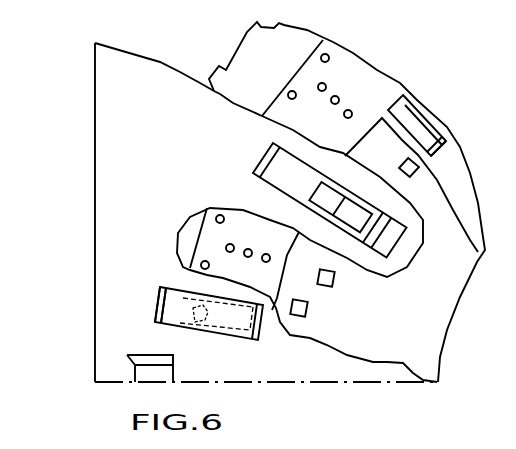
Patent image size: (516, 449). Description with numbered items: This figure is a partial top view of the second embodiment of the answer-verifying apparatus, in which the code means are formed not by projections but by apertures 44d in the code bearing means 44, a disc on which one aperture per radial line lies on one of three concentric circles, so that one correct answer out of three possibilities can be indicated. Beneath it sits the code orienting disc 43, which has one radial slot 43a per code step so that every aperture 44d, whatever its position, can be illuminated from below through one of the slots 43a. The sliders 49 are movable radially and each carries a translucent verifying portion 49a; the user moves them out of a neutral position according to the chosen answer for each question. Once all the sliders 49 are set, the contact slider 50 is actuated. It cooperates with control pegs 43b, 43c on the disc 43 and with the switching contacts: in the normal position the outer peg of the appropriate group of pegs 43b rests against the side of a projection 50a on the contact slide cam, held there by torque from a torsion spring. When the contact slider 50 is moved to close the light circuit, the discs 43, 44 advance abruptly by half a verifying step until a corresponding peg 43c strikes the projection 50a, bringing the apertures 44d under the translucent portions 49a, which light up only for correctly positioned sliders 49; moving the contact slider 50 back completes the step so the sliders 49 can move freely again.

The code orienting disc 43 is at (426, 110).
The radial slot 43a is at (440, 142).
The control pegs 43b is at (326, 86).
The control peg 43c is at (330, 57).
The code bearing means 44 is at (434, 337).
The apertures 44d is at (413, 178).
The sliders 49 is at (278, 160).
The translucent verifying portion 49a is at (335, 203).
The contact slider 50 is at (170, 293).
The projection 50a is at (167, 325).